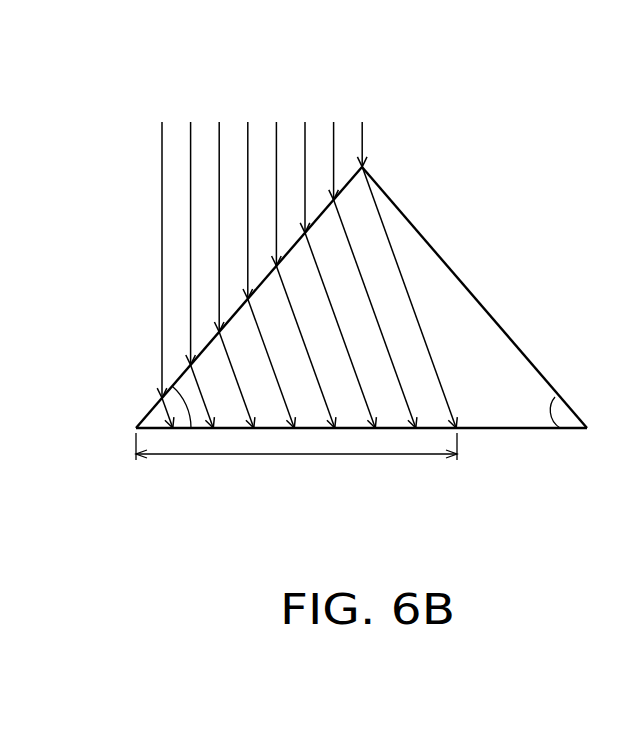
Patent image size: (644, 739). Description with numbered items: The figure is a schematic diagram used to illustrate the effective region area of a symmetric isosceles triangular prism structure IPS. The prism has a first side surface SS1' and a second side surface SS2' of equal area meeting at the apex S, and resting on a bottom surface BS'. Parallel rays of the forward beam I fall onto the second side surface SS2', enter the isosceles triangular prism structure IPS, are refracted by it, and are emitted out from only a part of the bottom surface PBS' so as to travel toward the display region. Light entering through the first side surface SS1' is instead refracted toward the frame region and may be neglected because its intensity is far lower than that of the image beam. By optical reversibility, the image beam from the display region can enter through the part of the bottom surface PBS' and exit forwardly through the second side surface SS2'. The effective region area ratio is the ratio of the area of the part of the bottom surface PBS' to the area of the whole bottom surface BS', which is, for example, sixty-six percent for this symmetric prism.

The forward beam I is at (162, 185).
The apex of prism S is at (363, 168).
The isosceles triangular prism structure IPS is at (448, 283).
The first side surface SS1' is at (494, 297).
The second side surface SS2' is at (215, 297).
The bottom surface BS' is at (381, 455).
The part of the bottom surface PBS' is at (296, 466).